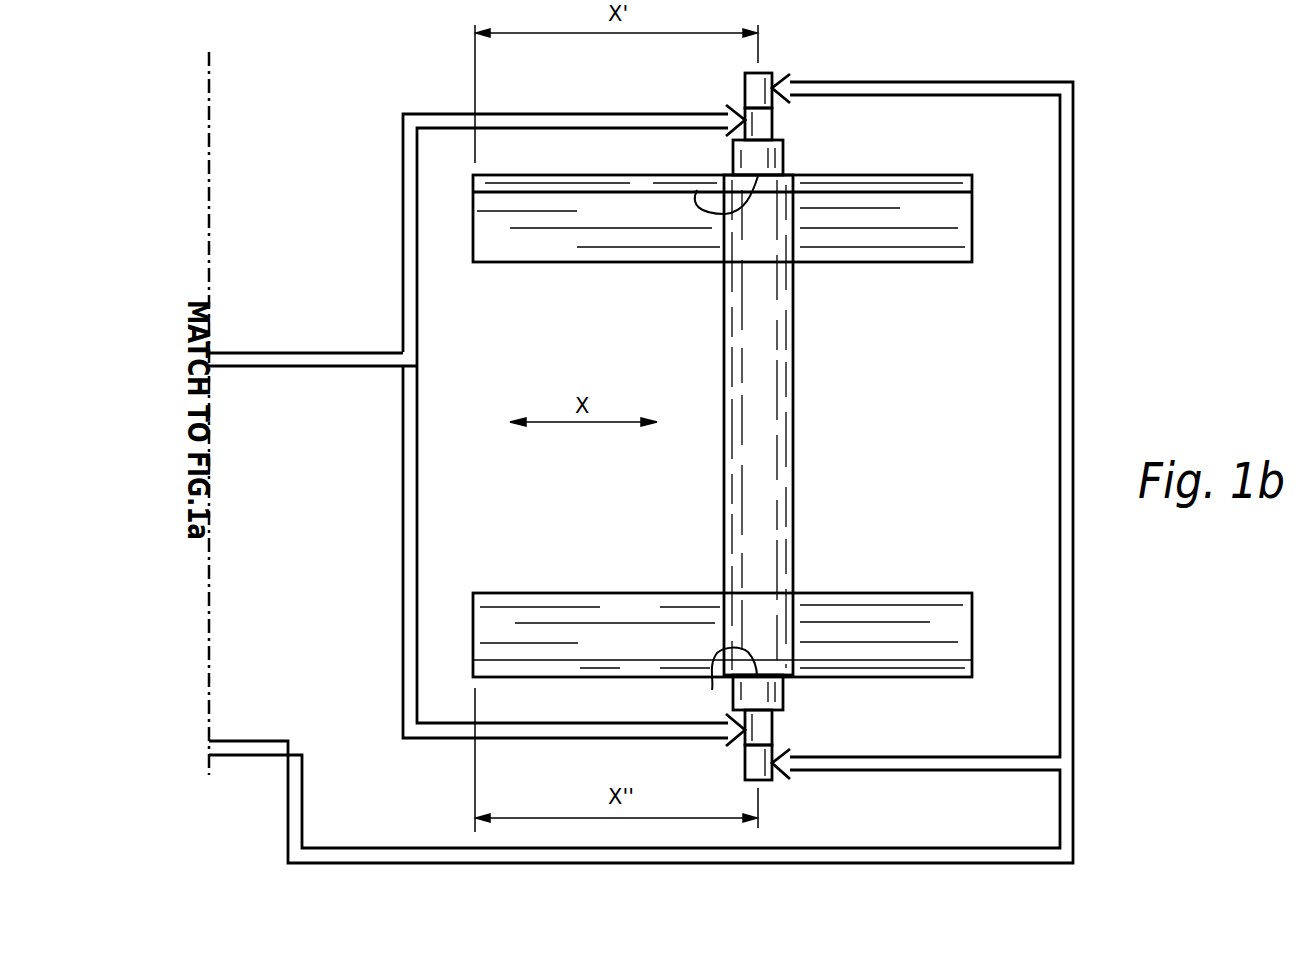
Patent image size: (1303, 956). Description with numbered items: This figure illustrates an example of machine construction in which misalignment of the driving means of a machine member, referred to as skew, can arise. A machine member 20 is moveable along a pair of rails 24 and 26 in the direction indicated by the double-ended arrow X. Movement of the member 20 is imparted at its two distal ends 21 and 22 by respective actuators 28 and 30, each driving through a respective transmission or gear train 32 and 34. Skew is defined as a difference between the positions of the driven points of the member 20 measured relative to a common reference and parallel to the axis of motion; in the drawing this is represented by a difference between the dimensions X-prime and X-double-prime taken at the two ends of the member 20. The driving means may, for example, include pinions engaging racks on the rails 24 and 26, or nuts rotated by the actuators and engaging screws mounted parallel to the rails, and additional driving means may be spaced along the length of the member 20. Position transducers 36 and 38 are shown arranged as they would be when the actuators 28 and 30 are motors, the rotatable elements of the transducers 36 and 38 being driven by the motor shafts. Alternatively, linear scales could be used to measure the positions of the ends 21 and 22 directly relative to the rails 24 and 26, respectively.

The machine member 20 is at (757, 427).
The distal end 21 is at (697, 190).
The distal end 22 is at (712, 690).
The rail 24 is at (597, 187).
The rail 26 is at (620, 668).
The actuator 28 is at (757, 128).
The actuator 30 is at (760, 728).
The transmission or gear train 32 is at (770, 160).
The transmission or gear train 34 is at (752, 695).
The position transducer 36 is at (757, 95).
The position transducer 38 is at (757, 764).